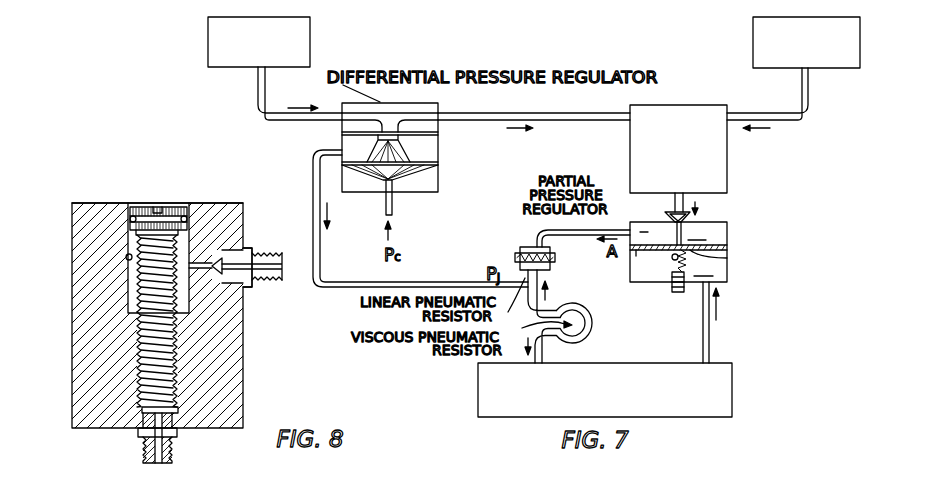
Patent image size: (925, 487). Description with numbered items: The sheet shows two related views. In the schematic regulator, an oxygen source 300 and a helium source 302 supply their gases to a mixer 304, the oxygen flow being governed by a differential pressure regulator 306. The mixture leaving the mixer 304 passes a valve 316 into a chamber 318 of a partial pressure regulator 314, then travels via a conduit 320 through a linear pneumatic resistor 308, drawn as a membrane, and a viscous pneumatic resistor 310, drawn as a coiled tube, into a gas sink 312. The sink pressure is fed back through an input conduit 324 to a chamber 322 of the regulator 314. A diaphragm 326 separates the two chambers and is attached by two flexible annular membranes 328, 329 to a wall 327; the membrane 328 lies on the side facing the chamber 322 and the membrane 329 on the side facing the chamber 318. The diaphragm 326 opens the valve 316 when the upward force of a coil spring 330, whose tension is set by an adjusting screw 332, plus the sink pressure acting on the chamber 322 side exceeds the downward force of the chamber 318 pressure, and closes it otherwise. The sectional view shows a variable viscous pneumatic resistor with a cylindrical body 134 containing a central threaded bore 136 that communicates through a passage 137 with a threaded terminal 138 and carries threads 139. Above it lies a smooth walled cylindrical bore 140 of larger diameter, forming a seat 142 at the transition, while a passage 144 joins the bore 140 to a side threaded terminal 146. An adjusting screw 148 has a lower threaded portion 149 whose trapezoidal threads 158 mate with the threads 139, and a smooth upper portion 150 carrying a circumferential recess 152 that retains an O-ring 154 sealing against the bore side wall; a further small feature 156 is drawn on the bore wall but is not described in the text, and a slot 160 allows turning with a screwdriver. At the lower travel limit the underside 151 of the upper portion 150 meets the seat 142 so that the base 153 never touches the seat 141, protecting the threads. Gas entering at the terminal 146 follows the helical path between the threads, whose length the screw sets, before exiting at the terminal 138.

In FIG. 8, the cylindrical body 134 is at (243, 365).
In FIG. 8, the central threaded bore 136 is at (141, 411).
In FIG. 8, the passage 137 is at (148, 446).
In FIG. 8, the threaded terminal 138 is at (173, 451).
In FIG. 8, the threads of the threaded bore 139 is at (178, 383).
In FIG. 8, the smooth walled cylindrical bore 140 is at (205, 258).
In FIG. 8, the seat of threaded bore 141 is at (180, 409).
In FIG. 8, the seat 142 is at (189, 300).
In FIG. 8, the passage 144 is at (191, 236).
In FIG. 8, the threaded terminal 146 is at (262, 281).
In FIG. 8, the adjusting screw 148 is at (175, 214).
In FIG. 8, the lower threaded portion 149 is at (138, 328).
In FIG. 8, the upper portion 150 is at (182, 236).
In FIG. 8, the underside 151 is at (130, 228).
In FIG. 8, the circumferential recess 152 is at (150, 213).
In FIG. 8, the base 153 is at (138, 378).
In FIG. 8, the O-ring 154 is at (131, 217).
In FIG. 8, the port 156 is at (127, 258).
In FIG. 8, the threads of the screw 158 is at (137, 278).
In FIG. 8, the slot 160 is at (157, 207).
In FIG. 7, the oxygen source 300 is at (313, 32).
In FIG. 7, the helium source 302 is at (753, 34).
In FIG. 7, the mixer 304 is at (630, 107).
In FIG. 7, the differential pressure regulator 306 is at (438, 104).
In FIG. 7, the linear pneumatic resistor 308 is at (556, 261).
In FIG. 7, the viscous pneumatic resistor 310 is at (592, 318).
In FIG. 7, the gas sink 312 is at (732, 382).
In FIG. 7, the partial pressure regulator 314 is at (727, 277).
In FIG. 7, the valve 316 is at (665, 215).
In FIG. 7, the chamber 318 is at (697, 233).
In FIG. 7, the conduit 320 is at (537, 232).
In FIG. 7, the chamber 322 is at (703, 269).
In FIG. 7, the input conduit 324 is at (709, 333).
In FIG. 7, the diaphragm 326 is at (688, 246).
In FIG. 7, the wall 327 is at (636, 250).
In FIG. 7, the flexible annular membrane 328 is at (692, 251).
In FIG. 7, the flexible annular membrane 329 is at (654, 233).
In FIG. 7, the coil spring 330 is at (658, 265).
In FIG. 7, the adjusting screw 332 is at (676, 291).